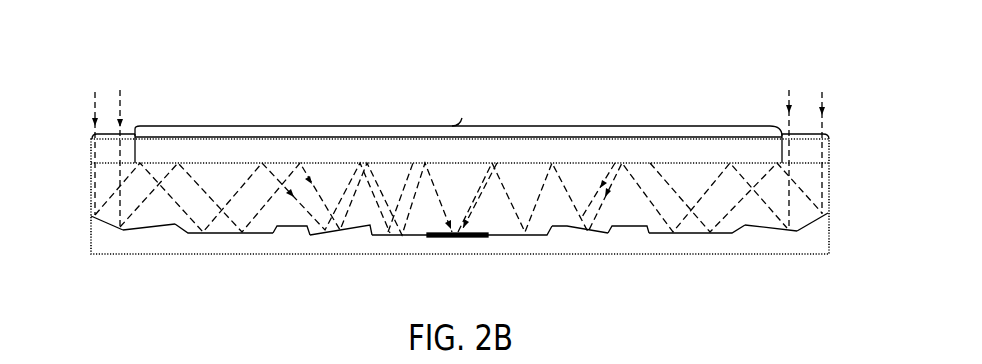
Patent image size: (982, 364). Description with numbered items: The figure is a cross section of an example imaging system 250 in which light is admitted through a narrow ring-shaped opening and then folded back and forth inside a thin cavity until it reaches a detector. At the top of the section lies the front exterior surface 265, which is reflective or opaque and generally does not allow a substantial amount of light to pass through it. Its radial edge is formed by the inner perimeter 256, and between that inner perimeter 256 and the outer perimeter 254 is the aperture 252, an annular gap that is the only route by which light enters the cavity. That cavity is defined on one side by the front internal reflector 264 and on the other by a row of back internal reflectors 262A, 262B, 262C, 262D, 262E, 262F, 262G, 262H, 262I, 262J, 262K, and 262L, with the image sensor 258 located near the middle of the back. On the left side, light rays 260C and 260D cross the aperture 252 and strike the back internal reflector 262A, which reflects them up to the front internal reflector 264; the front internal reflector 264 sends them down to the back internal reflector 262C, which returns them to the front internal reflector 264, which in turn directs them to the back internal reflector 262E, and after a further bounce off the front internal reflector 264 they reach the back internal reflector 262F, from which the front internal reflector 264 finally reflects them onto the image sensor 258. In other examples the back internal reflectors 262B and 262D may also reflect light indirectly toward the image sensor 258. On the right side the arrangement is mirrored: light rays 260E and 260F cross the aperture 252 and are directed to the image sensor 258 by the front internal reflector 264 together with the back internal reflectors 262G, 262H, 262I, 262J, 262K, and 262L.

The imaging system 250 is at (456, 66).
The aperture 252 is at (116, 133).
The outer perimeter 254 is at (91, 139).
The inner perimeter 256 is at (135, 134).
The image sensor 258 is at (431, 233).
The light ray 260C is at (94, 104).
The light ray 260D is at (122, 92).
The light ray 260E is at (789, 90).
The light ray 260F is at (823, 102).
The back internal reflector 262A is at (110, 224).
The back internal reflector 262B is at (145, 231).
The back internal reflector 262C is at (213, 235).
The back internal reflector 262D is at (279, 228).
The back internal reflector 262E is at (332, 230).
The back internal reflector 262F is at (380, 237).
The back internal reflector 262G is at (518, 237).
The back internal reflector 262H is at (568, 229).
The back internal reflector 262I is at (615, 228).
The back internal reflector 262J is at (682, 232).
The back internal reflector 262K is at (753, 228).
The back internal reflector 262L is at (798, 233).
The front internal reflector 264 is at (232, 163).
The front exterior surface 265 is at (463, 118).